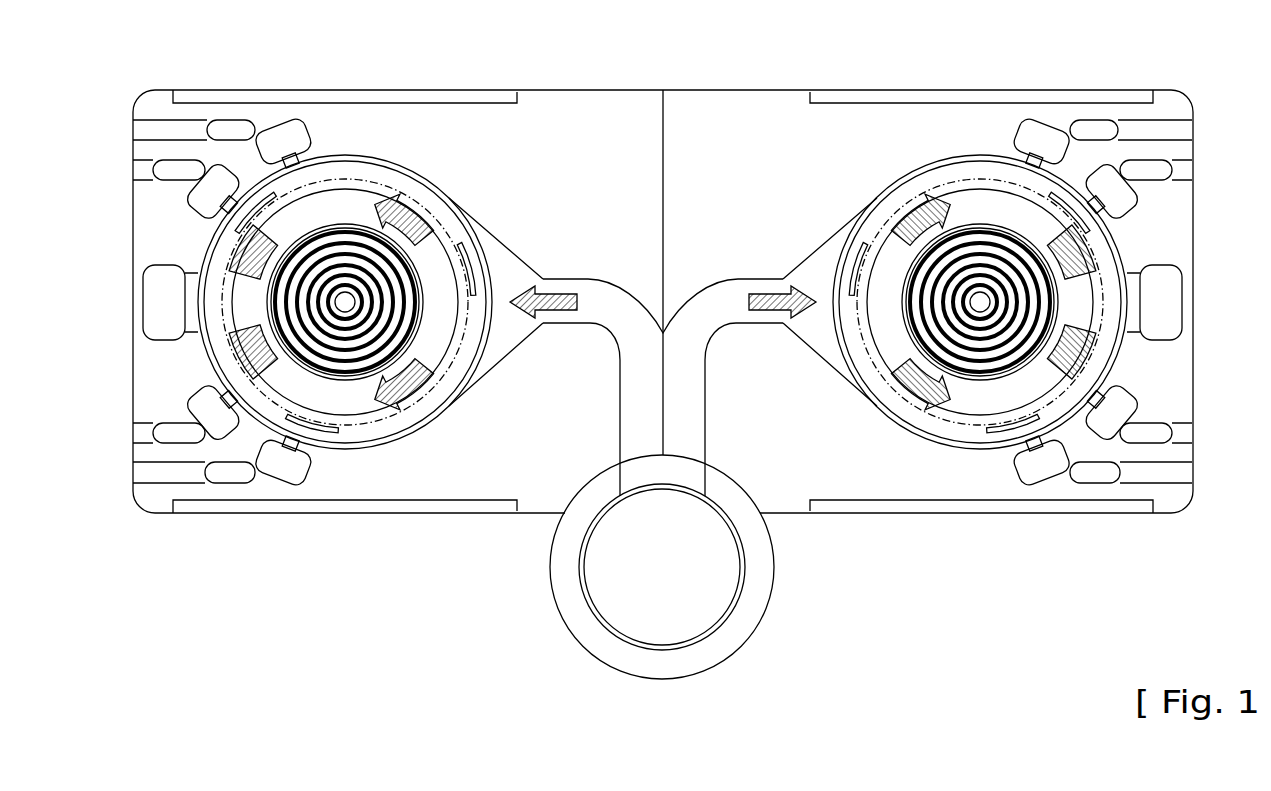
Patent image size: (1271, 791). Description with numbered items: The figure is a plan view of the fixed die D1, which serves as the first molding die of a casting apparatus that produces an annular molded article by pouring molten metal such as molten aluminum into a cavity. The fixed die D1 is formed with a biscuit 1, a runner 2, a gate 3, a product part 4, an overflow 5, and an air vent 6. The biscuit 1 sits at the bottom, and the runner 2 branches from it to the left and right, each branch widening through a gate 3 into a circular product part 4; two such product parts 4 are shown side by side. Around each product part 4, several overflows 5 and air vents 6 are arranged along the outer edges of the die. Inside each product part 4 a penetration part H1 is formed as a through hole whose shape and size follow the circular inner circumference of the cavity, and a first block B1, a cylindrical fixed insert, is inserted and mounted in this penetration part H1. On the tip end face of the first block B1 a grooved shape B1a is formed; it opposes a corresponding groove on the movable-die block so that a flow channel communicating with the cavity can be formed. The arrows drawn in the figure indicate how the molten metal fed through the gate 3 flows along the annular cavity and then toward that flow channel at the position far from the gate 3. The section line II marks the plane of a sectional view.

The fixed die D1 is at (772, 89).
The biscuit 1 is at (745, 567).
The runner 2 is at (601, 296).
The gate 3 is at (505, 232).
The product part 4 is at (210, 371).
The overflow 5 is at (297, 128).
The air vent 6 is at (228, 128).
The penetration part H1 is at (335, 230).
The first block B1 is at (363, 383).
The grooved shape B1a is at (413, 300).
The section line II- II is at (980, 42).